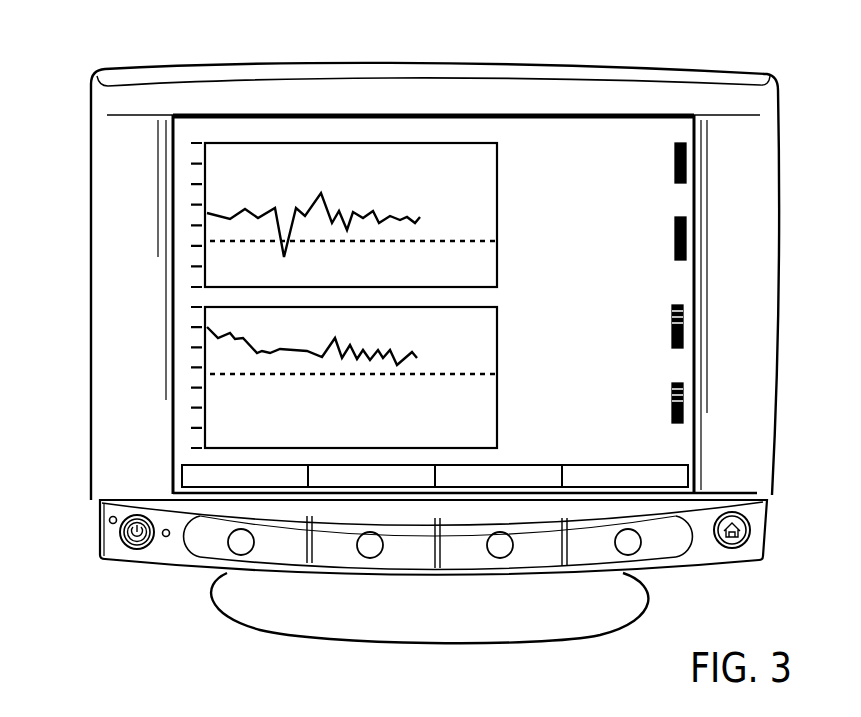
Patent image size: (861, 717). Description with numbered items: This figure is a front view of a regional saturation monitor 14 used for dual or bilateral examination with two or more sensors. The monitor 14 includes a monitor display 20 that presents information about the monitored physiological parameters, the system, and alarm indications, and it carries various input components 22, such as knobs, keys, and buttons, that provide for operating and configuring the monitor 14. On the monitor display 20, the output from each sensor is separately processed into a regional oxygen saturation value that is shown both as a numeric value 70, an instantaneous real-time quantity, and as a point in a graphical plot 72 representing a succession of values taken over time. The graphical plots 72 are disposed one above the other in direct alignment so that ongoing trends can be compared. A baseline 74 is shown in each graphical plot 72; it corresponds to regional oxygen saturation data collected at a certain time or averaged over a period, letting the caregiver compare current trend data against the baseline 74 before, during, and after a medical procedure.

The monitor 14 is at (680, 68).
The monitor display 20 is at (488, 132).
The input components 22 is at (752, 492).
The numeric value 70 is at (717, 203).
The graphical plot 72 is at (191, 179).
The baseline 74 is at (214, 241).